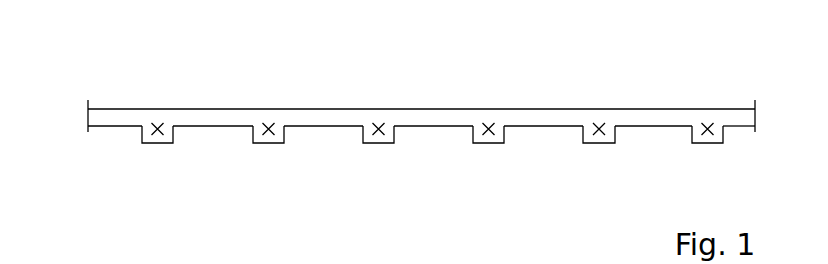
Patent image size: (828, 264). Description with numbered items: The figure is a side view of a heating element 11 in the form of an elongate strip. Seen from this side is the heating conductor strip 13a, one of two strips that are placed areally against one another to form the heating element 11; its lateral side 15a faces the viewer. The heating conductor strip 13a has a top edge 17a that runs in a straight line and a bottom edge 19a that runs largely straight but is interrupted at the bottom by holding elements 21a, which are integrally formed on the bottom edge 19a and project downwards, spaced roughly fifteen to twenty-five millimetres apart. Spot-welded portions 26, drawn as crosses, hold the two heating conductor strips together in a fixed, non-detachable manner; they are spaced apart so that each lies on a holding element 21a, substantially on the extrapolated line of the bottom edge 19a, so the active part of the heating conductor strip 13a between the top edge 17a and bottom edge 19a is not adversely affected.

The heating element 11 is at (95, 88).
The heating conductor strip 13a is at (191, 118).
The lateral side 15a is at (323, 112).
The top edge 17a is at (538, 110).
The bottom edge 19a is at (437, 127).
The holding element 21a is at (165, 145).
The spot-welded portion 26 is at (145, 151).